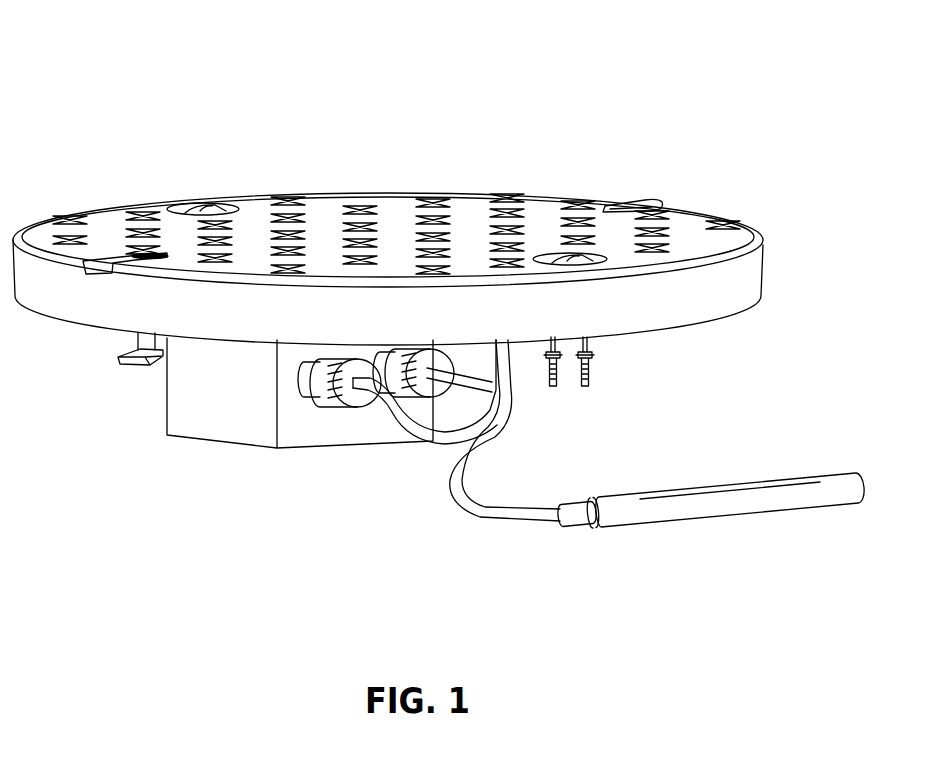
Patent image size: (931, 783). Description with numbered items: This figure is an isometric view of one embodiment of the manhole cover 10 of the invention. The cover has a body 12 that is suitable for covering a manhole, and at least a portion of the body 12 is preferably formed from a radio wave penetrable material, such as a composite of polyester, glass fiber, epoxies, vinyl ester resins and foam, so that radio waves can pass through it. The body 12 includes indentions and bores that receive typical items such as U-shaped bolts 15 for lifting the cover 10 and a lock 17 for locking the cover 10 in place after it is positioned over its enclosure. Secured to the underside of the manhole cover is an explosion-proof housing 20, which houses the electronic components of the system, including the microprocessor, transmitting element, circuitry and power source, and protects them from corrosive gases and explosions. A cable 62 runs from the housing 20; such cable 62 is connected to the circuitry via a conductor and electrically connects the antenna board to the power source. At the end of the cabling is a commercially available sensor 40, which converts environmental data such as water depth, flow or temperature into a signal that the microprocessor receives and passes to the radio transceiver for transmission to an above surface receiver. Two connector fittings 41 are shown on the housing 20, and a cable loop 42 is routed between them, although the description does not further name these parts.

The manhole cover 10 is at (506, 140).
The body 12 is at (762, 272).
The U-shaped bolts 15 is at (592, 373).
The lock 17 is at (113, 362).
The explosion-proof housing 20 is at (165, 420).
The sensor 40 is at (712, 520).
The connector knobs 41 is at (337, 405).
The cable loop 42 is at (520, 420).
The cable 62 is at (437, 445).